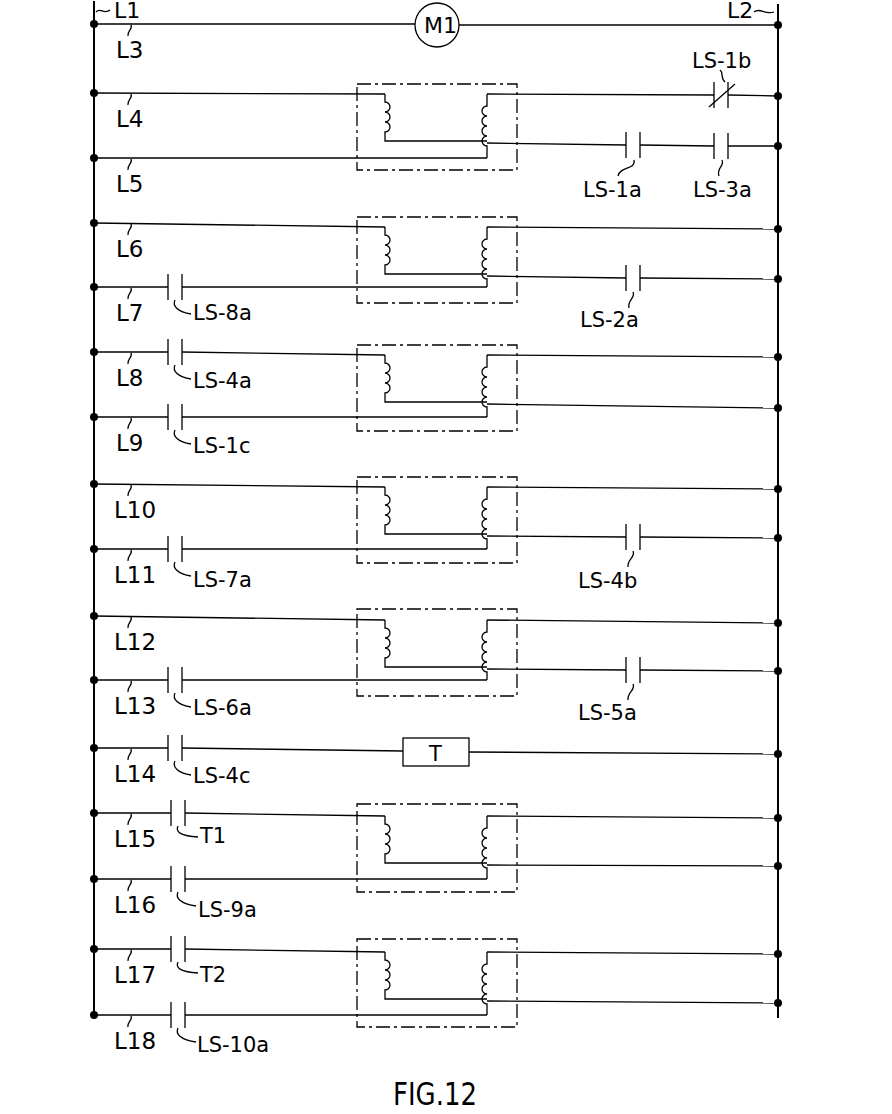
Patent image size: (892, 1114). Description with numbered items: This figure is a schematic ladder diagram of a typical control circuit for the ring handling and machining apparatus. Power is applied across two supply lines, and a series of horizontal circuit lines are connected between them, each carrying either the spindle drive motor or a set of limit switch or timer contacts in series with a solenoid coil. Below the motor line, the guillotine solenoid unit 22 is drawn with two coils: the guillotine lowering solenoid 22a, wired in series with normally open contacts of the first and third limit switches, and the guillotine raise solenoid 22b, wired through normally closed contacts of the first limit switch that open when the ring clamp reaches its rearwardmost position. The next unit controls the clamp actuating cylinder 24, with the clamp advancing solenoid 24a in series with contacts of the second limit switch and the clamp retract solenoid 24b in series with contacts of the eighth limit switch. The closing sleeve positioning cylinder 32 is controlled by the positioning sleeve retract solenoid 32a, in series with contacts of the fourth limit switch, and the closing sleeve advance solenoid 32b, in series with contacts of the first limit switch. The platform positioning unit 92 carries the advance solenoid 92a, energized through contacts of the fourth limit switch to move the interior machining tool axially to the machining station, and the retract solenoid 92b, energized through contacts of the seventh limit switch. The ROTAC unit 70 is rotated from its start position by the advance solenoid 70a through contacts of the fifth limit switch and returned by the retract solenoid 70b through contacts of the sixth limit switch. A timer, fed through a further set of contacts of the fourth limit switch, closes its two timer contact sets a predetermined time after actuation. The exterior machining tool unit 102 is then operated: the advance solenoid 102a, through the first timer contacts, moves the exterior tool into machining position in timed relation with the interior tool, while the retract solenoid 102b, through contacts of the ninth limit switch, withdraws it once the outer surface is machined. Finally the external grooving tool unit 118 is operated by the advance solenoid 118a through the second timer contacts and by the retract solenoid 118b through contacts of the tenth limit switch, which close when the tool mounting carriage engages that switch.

The guillotine solenoid valve 22 is at (357, 115).
The guillotine lowering solenoid 22a is at (392, 117).
The guillotine raise solenoid 22b is at (479, 126).
The clamp actuating cylinder 24 is at (357, 238).
The clamp advancing solenoid 24a is at (392, 250).
The clamp retract solenoid 24b is at (477, 259).
The closing sleeve positioning cylinder 32 is at (357, 376).
The positioning sleeve retract solenoid 32a is at (392, 378).
The closing sleeve advance solenoid 32b is at (477, 387).
The platform positioning cylinder solenoid valve 92 is at (357, 506).
The platform positioning advance solenoid 92a is at (392, 510).
The platform positioning retract solenoid 92b is at (477, 519).
The ROTAC unit 70 is at (357, 640).
The ROTAC advance solenoid 70a is at (392, 642).
The ROTAC retract solenoid 70b is at (477, 652).
The exterior machining tool solenoid valve 102 is at (357, 838).
The exterior tool advance solenoid 102a is at (392, 838).
The exterior tool retract solenoid 102b is at (479, 847).
The external grooving tool solenoid valve 118 is at (357, 968).
The grooving tool advance solenoid 118a is at (392, 972).
The grooving tool retract solenoid 118b is at (479, 984).